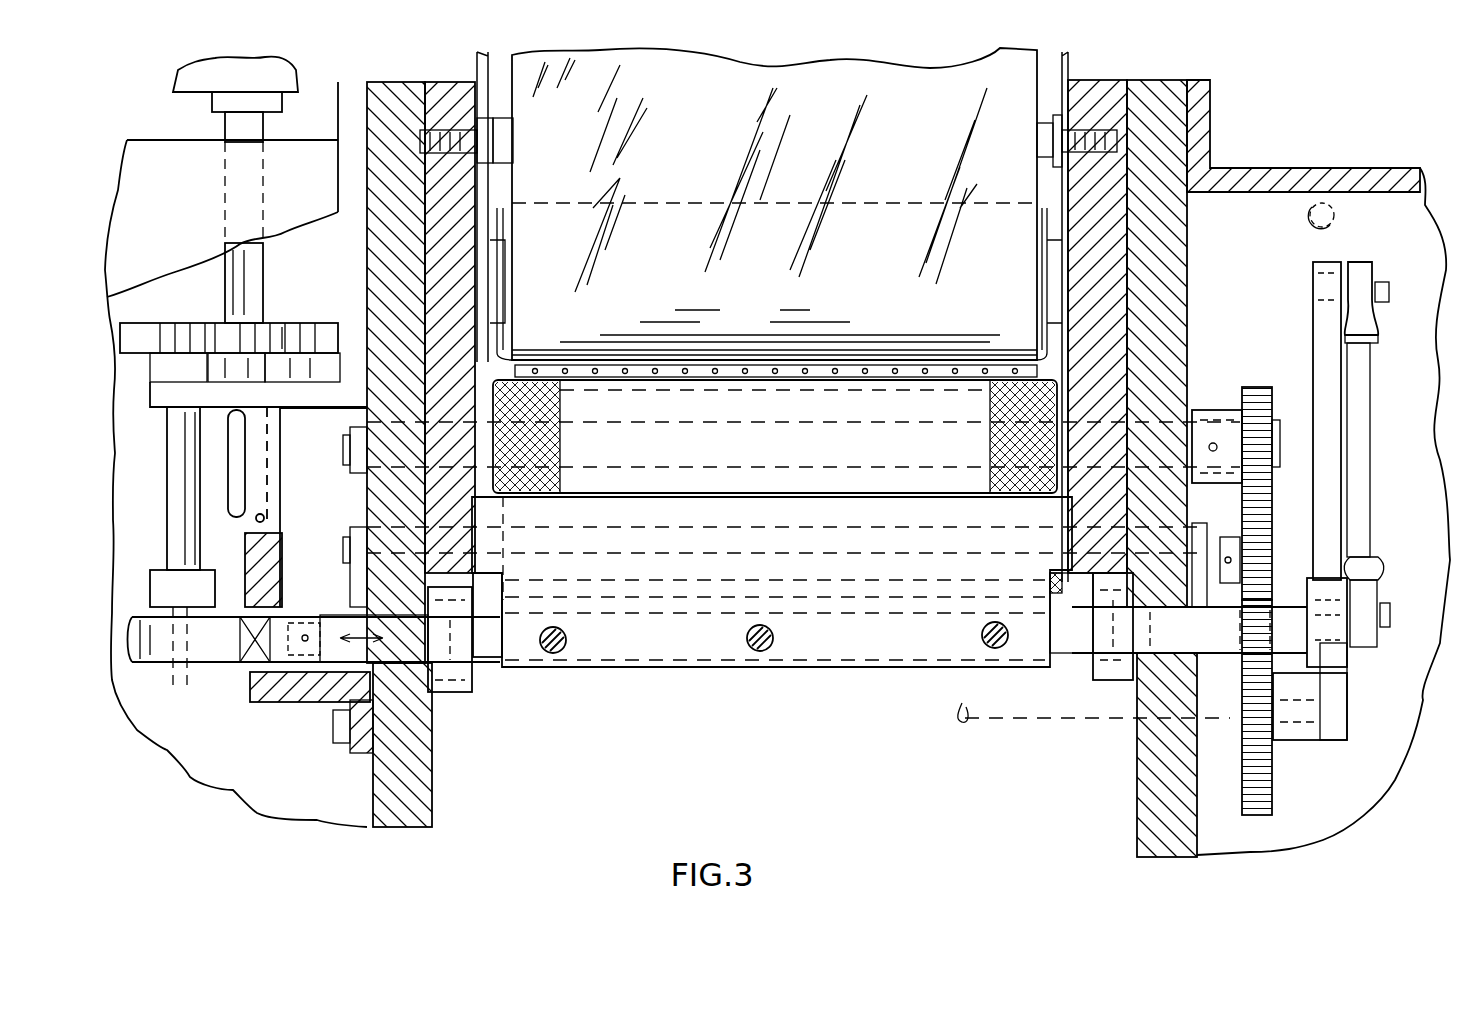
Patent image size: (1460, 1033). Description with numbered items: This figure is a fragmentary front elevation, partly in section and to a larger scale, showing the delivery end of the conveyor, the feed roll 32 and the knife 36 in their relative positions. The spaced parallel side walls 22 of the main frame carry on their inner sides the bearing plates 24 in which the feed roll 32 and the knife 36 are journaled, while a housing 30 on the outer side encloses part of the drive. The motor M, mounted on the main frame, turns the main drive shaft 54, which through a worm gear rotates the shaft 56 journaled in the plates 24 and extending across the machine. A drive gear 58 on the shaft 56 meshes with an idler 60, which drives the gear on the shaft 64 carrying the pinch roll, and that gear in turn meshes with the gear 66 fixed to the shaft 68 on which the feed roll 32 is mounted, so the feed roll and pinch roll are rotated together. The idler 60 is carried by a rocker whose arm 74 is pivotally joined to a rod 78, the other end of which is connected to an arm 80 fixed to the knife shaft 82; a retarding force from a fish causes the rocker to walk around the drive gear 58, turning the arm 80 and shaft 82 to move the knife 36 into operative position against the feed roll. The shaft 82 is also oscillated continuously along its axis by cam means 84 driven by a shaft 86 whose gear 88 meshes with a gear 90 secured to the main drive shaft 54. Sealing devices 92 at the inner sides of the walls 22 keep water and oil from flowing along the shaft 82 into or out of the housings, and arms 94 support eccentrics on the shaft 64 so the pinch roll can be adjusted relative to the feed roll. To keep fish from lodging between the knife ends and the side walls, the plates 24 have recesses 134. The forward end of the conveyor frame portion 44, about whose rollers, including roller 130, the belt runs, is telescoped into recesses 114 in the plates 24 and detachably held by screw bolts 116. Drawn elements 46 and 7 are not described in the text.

The motor M is at (212, 76).
The side walls 22 is at (377, 238).
The bearing plates 24 is at (470, 190).
The housing 30 is at (1318, 172).
The feed roll 32 is at (965, 380).
The knife 36 is at (873, 655).
The conveyor frame portion 44 is at (955, 64).
The perforated bar 46 is at (880, 367).
The main drive shaft 54 is at (228, 277).
The shaft 56 is at (1027, 728).
The drive gear 58 is at (1275, 780).
The idler 60 is at (1275, 680).
The shaft 64 is at (1178, 613).
The gear 66 is at (1256, 387).
The shaft 68 is at (1278, 428).
The arm 74 is at (1317, 300).
The rod 78 is at (1362, 387).
The arm 80 is at (1345, 655).
The shaft 82 is at (492, 668).
The cam means 84 is at (194, 694).
The shaft 86 is at (175, 497).
The gear 88 is at (170, 323).
The gear 90 is at (291, 323).
The sealing devices 92 is at (455, 692).
The arms 94 is at (350, 535).
The recesses 114 is at (478, 72).
The screw bolts 116 is at (515, 136).
The roller 130 is at (852, 204).
The recesses 134 is at (498, 497).
The section line 7- 7 is at (1200, 507).